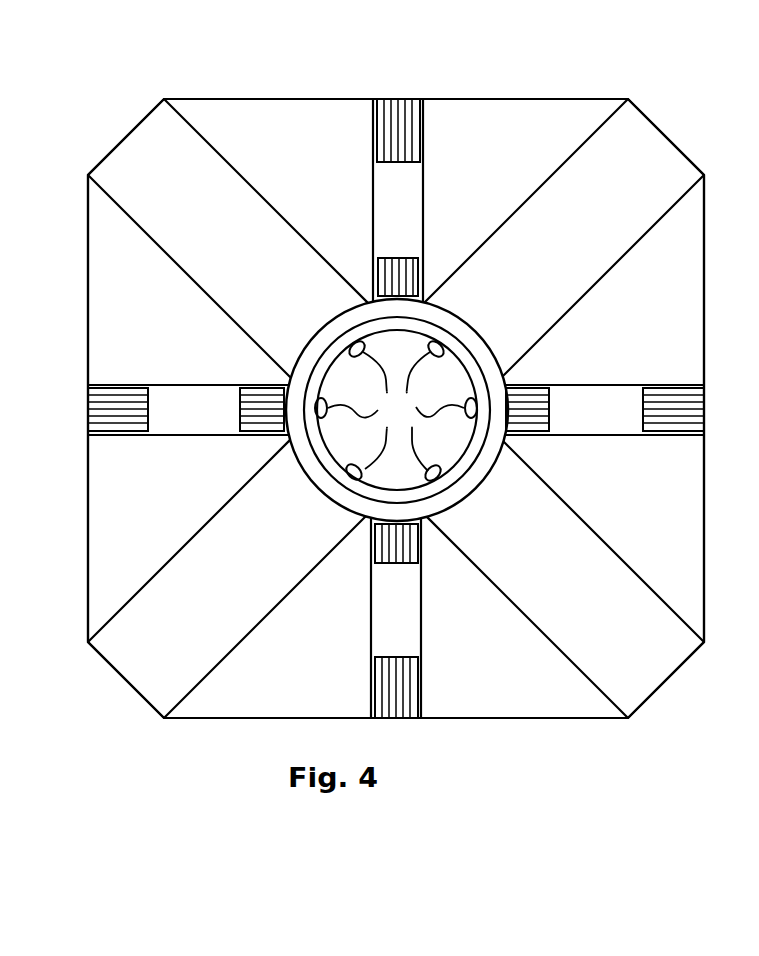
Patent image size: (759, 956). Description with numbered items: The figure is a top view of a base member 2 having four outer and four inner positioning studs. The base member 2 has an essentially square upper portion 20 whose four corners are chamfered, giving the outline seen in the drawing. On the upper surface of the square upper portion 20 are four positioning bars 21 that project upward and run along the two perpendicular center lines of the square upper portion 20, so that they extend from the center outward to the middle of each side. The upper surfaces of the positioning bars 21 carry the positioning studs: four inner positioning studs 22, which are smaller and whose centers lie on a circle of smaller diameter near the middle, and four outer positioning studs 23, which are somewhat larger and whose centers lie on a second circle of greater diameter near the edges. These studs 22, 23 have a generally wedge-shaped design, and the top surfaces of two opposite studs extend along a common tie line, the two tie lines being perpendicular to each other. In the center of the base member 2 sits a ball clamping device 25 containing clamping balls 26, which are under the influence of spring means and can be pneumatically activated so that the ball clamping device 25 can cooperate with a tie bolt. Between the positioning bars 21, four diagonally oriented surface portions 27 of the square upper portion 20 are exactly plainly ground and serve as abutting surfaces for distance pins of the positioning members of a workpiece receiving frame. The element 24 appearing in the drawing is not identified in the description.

The base member 2 is at (528, 712).
The square upper portion 20 is at (690, 228).
The positioning bars 21 is at (412, 209).
The inner positioning studs 22 is at (419, 276).
The outer positioning studs 23 is at (420, 133).
The web 24 is at (395, 258).
The ball clamping device 25 is at (341, 508).
The clamping balls 26 is at (396, 410).
The diagonally oriented surface portions 27 is at (222, 266).